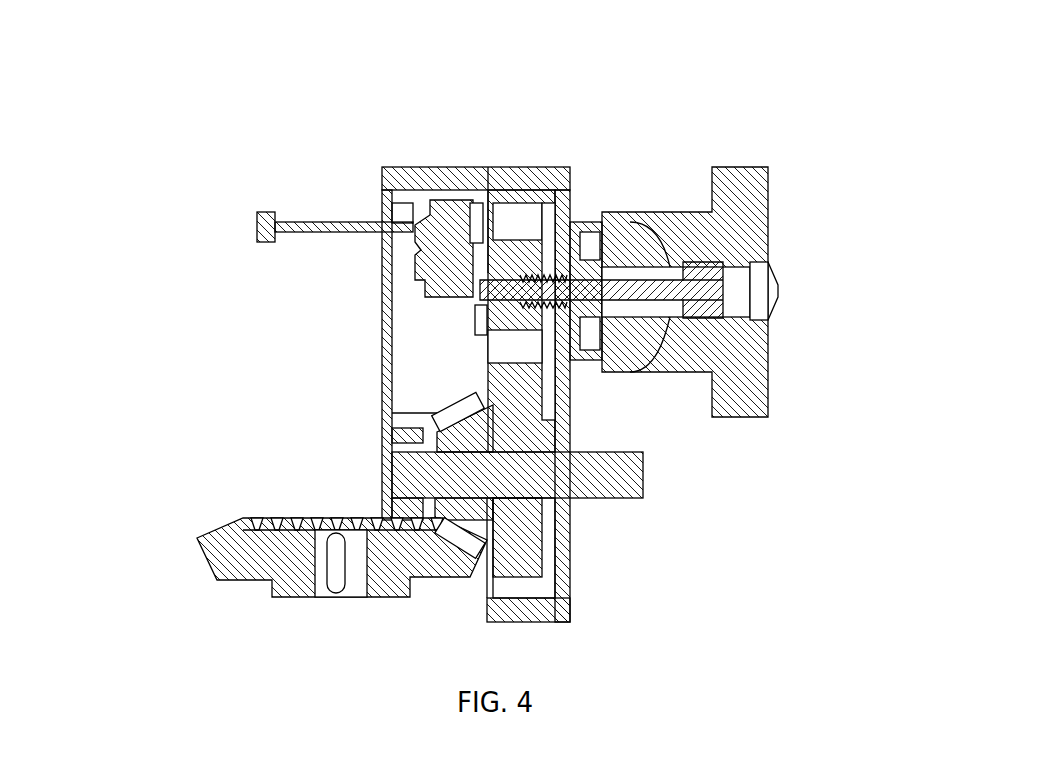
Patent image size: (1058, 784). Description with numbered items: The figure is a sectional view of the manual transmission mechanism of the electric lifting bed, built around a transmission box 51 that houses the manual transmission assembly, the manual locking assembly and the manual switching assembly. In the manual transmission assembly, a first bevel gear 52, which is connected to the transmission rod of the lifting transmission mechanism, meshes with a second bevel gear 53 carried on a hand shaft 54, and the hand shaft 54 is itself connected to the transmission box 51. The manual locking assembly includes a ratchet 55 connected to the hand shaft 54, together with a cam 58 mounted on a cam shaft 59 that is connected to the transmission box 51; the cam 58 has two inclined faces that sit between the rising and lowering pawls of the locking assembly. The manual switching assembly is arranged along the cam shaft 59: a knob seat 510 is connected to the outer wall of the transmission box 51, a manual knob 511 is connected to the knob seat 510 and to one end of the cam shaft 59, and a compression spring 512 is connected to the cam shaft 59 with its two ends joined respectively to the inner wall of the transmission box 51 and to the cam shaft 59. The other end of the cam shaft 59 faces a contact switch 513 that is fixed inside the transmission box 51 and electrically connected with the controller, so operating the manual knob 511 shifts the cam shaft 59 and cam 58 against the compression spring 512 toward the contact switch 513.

The transmission box 51 is at (388, 168).
The contact switch 513 is at (385, 222).
The knob seat 510 is at (600, 212).
The manual knob 511 is at (708, 225).
The compression spring 512 is at (683, 320).
The cam shaft 59 is at (473, 300).
The cam 58 is at (480, 333).
The first bevel gear 52 is at (244, 582).
The second bevel gear 53 is at (362, 596).
The hand shaft 54 is at (598, 480).
The ratchet 55 is at (547, 530).